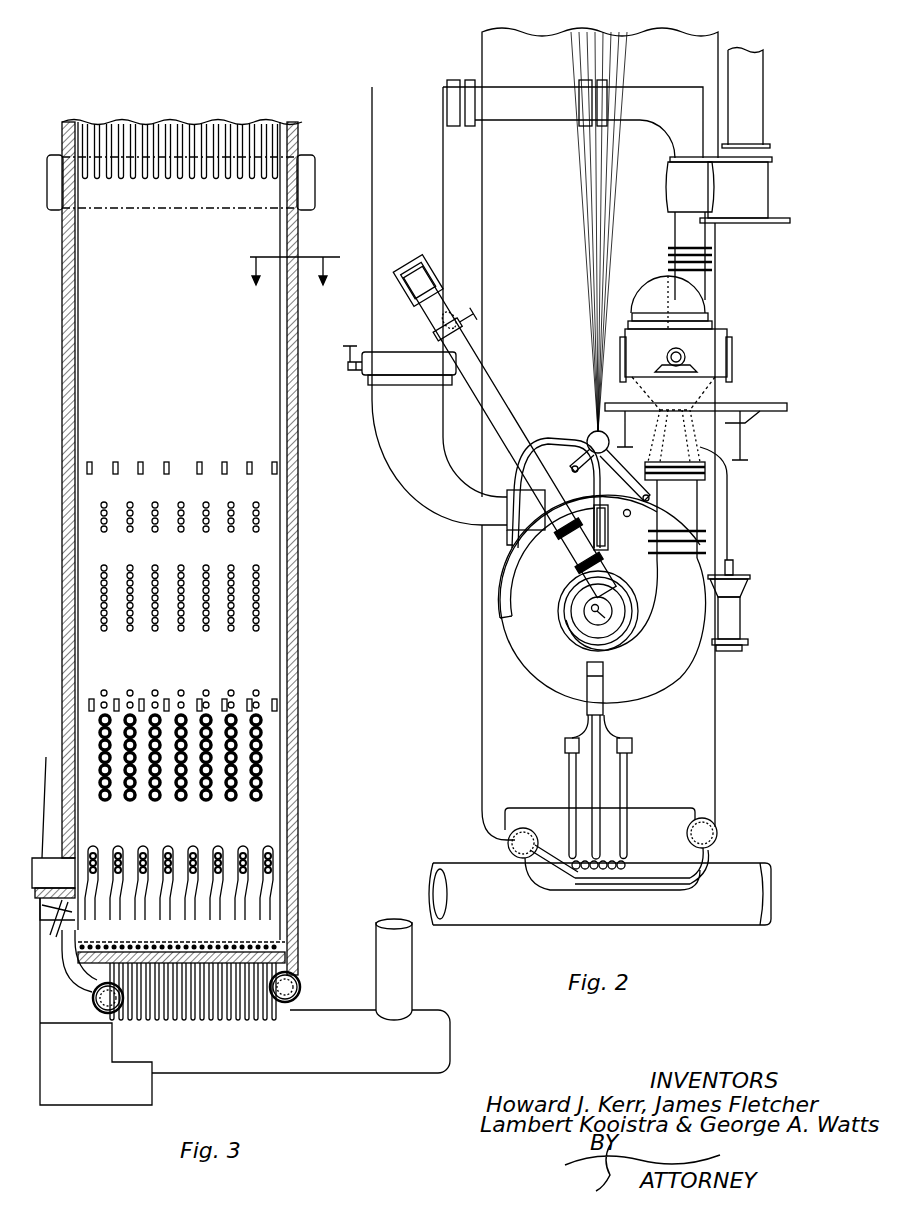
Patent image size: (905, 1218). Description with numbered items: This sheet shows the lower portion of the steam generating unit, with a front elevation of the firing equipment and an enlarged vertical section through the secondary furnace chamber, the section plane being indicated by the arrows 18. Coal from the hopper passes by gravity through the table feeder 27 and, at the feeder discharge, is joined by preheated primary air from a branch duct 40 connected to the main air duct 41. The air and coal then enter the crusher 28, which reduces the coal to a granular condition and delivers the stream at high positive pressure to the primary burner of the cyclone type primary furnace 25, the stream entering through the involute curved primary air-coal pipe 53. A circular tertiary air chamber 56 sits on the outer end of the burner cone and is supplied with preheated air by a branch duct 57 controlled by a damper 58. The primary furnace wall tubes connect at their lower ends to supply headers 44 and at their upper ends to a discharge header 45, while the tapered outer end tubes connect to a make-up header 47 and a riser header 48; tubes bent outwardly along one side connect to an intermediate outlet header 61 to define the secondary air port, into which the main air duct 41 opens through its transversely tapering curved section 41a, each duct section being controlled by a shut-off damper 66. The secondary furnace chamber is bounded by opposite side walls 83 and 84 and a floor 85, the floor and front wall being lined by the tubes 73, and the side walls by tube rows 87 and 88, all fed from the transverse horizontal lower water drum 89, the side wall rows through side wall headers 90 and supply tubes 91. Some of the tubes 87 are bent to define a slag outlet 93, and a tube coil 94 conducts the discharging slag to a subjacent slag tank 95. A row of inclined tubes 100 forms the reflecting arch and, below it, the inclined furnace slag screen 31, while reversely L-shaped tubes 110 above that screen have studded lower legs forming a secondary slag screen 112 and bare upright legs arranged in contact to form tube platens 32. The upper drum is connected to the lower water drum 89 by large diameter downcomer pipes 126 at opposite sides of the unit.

In FIG. 3, the section line 18 is at (288, 286).
In FIG. 2, the cyclone type primary furnace 25 is at (535, 678).
In FIG. 2, the table feeder 27 is at (745, 212).
In FIG. 2, the crusher 28 is at (715, 300).
In FIG. 3, the furnace slag screen 31 is at (222, 853).
In FIG. 3, the tube platens 32 is at (155, 630).
In FIG. 2, the branch duct 40 is at (655, 100).
In FIG. 2, the main air duct 41 is at (420, 207).
In FIG. 2, the transversely tapering curved section 41a is at (458, 478).
In FIG. 2, the supply headers 44 is at (572, 738).
In FIG. 2, the discharge header 45 is at (590, 432).
In FIG. 2, the make-up header 47 is at (603, 688).
In FIG. 2, the riser header 48 is at (609, 538).
In FIG. 2, the involute curved primary air-coal pipe 53 is at (653, 622).
In FIG. 2, the tertiary air chamber 56 is at (583, 617).
In FIG. 2, the branch duct 57 is at (495, 402).
In FIG. 2, the damper 58 is at (470, 328).
In FIG. 2, the intermediate outlet header 61 is at (528, 556).
In FIG. 2, the shut-off damper 66 is at (367, 372).
In FIG. 3, the tubes 73 is at (195, 945).
In FIG. 3, the side wall 83 is at (62, 636).
In FIG. 3, the side wall 84 is at (298, 648).
In FIG. 3, the floor 85 is at (155, 945).
In FIG. 3, the tube row 87 is at (78, 672).
In FIG. 3, the tube row 88 is at (280, 668).
In FIG. 3, the lower water drum 89 is at (335, 1060).
In FIG. 2, the lower water drum 89 is at (460, 876).
In FIG. 3, the side wall headers 90 is at (300, 985).
In FIG. 2, the side wall headers 90 is at (718, 833).
In FIG. 2, the supply tubes 91 is at (668, 884).
In FIG. 3, the slag outlet 93 is at (82, 930).
In FIG. 3, the tube coil 94 is at (55, 918).
In FIG. 3, the slag tank 95 is at (96, 1001).
In FIG. 3, the inclined tubes 100 is at (259, 505).
In FIG. 3, the reversely L-shaped tubes 110 is at (259, 568).
In FIG. 3, the secondary slag screen 112 is at (250, 805).
In FIG. 3, the downcomer pipes 126 is at (400, 960).